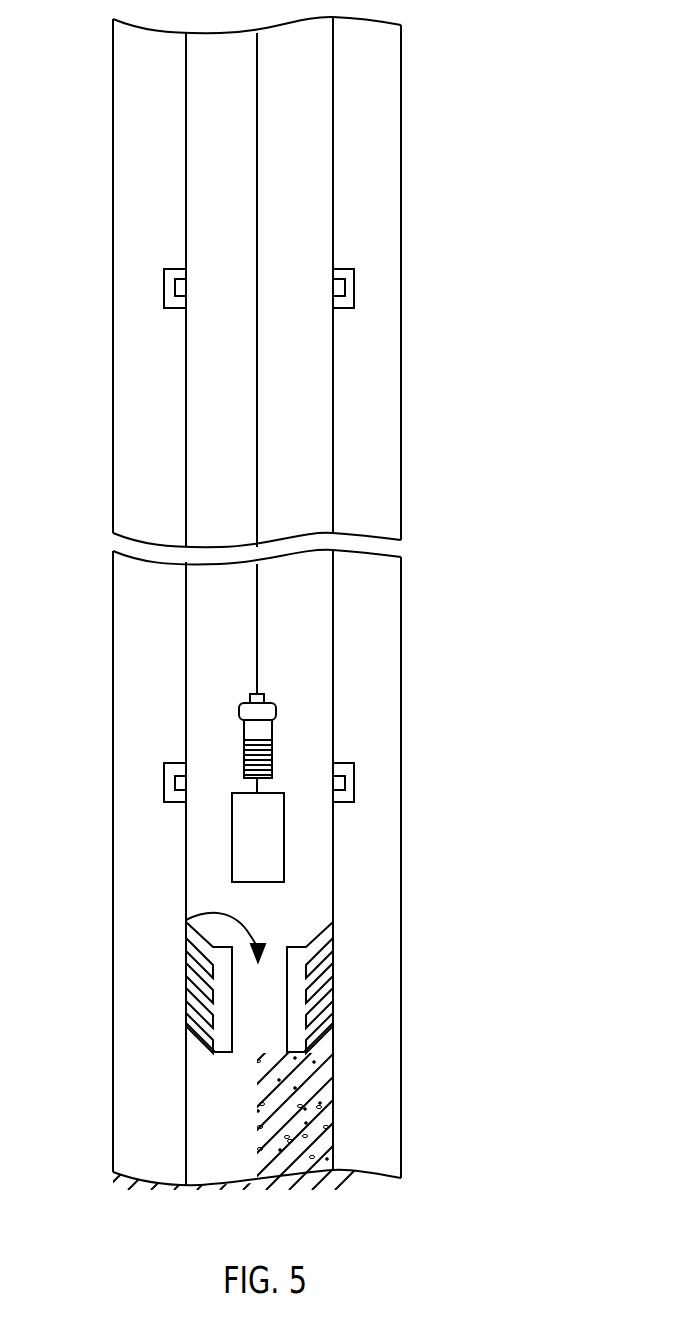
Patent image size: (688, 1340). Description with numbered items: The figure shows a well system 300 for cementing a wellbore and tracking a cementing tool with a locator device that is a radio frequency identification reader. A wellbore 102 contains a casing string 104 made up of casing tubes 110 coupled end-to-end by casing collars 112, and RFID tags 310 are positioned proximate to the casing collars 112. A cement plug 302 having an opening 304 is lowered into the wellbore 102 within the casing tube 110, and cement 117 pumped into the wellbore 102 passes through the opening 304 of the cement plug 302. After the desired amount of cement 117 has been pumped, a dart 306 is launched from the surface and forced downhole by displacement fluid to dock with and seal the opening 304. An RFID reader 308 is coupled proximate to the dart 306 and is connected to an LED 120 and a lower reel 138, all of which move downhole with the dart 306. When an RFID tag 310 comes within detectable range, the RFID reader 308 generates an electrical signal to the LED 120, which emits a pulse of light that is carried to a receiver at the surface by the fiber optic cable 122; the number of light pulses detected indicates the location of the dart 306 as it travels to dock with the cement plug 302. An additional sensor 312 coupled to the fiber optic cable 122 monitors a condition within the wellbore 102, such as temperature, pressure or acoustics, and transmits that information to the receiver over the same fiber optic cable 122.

The well system 300 is at (527, 113).
The wellbore 102 is at (401, 408).
The casing string 104 is at (333, 470).
The casing tube 110 is at (333, 137).
The casing collar 112 is at (354, 290).
The RFID tag 310 is at (176, 284).
The fiber optic cable 122 is at (257, 232).
The additional sensor 312 is at (250, 698).
The LED 120 is at (275, 713).
The RFID reader 308 is at (267, 730).
The lower reel 138 is at (244, 753).
The dart 306 is at (232, 835).
The opening 304 is at (186, 920).
The cement plug 302 is at (323, 935).
The cement 117 is at (215, 1110).